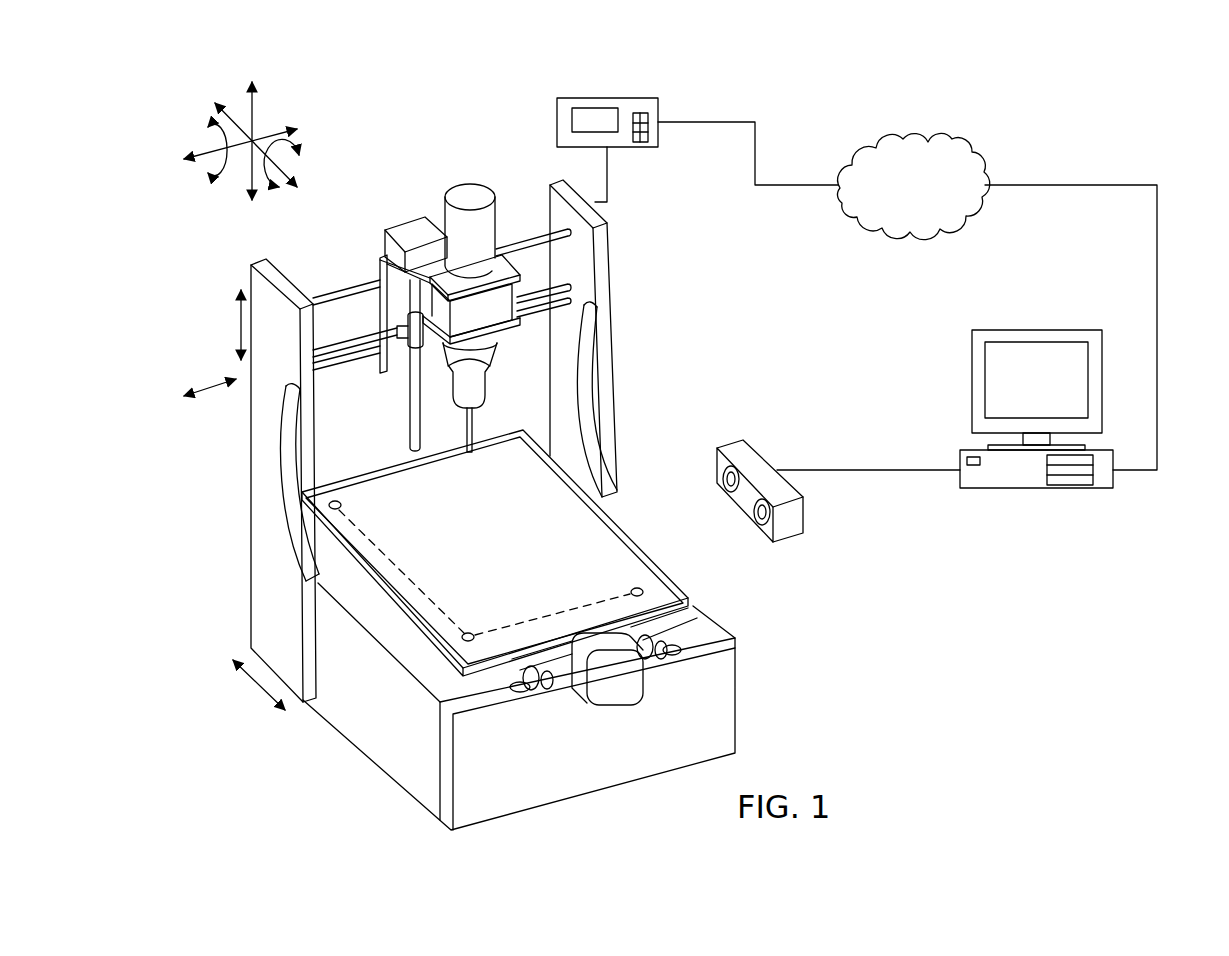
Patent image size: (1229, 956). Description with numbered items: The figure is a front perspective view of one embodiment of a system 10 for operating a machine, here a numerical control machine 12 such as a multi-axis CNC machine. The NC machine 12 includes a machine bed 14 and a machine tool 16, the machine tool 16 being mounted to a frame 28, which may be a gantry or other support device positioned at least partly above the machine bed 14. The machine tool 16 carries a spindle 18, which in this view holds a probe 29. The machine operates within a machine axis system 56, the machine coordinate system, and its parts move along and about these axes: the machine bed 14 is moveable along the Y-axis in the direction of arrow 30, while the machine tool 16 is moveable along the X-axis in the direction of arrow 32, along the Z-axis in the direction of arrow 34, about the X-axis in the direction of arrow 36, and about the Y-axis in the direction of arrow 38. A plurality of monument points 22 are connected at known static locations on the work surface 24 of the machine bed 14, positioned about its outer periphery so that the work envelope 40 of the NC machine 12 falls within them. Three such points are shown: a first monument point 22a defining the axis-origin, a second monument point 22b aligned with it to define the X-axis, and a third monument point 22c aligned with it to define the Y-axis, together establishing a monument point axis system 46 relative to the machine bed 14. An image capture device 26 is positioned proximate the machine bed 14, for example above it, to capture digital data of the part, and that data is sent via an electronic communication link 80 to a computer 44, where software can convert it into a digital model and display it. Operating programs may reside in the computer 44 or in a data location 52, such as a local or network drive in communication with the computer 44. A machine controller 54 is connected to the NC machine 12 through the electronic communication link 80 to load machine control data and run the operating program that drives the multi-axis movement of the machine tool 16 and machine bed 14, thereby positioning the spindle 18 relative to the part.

The system 10 is at (1145, 128).
The numerical control machine 12 is at (735, 690).
The machine bed 14 is at (668, 570).
The machine tool 16 is at (498, 239).
The spindle 18 is at (487, 396).
The monument points 22 is at (517, 558).
The first monument point 22a is at (468, 630).
The second monument point 22b is at (636, 587).
The third monument point 22c is at (342, 503).
The work surface 24 is at (546, 497).
The image capture device 26 is at (758, 452).
The frame 28 is at (612, 266).
The probe 29 is at (476, 428).
The arrow 30 is at (254, 686).
The arrow 32 is at (210, 382).
The arrow 34 is at (238, 308).
The arrow 36 is at (207, 124).
The arrow 38 is at (298, 152).
The work envelope 40 is at (512, 520).
The computer 44 is at (1078, 330).
The monument point axis system 46 is at (410, 577).
The data location 52 is at (985, 157).
The machine controller 54 is at (662, 108).
The machine axis system 56 is at (233, 184).
The electronic communication link 80 is at (755, 152).